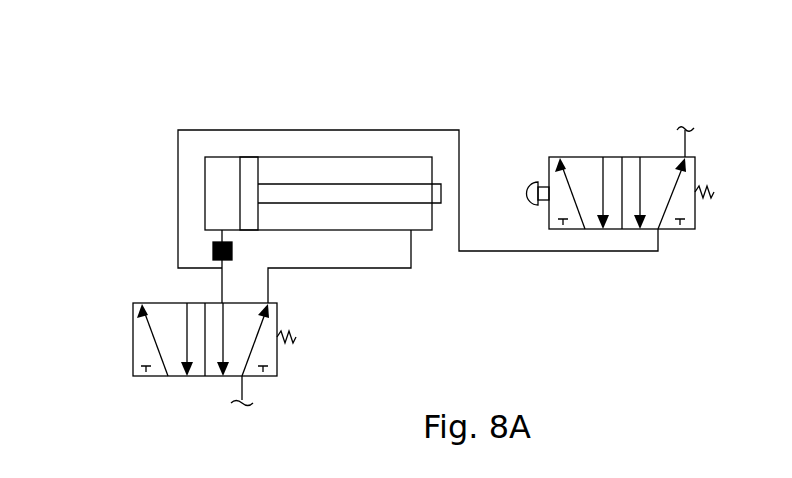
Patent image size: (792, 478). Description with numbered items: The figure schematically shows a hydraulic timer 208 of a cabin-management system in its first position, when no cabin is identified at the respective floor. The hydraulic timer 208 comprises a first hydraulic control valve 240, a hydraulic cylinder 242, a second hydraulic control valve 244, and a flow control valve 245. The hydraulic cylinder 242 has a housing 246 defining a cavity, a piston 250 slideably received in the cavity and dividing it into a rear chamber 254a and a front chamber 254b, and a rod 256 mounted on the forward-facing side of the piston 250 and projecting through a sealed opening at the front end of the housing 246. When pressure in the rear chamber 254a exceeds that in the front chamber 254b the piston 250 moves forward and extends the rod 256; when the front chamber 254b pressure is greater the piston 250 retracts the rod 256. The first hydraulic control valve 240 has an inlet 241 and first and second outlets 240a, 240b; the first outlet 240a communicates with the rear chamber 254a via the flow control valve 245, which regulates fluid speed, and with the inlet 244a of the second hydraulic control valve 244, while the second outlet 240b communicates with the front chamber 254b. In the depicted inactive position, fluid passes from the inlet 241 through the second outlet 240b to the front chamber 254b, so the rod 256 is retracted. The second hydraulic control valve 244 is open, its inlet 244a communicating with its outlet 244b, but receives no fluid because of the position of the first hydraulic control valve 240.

The hydraulic timer 208 is at (632, 103).
The first hydraulic control valve 240 is at (133, 360).
The first outlet 240a is at (143, 303).
The second outlet 240b is at (272, 304).
The inlet 241 is at (250, 392).
The hydraulic cylinder 242 is at (322, 146).
The second hydraulic control valve 244 is at (697, 213).
The inlet 244a is at (660, 232).
The outlet 244b is at (687, 131).
The flow control valve 245 is at (234, 250).
The housing 246 is at (276, 158).
The piston 250 is at (250, 172).
The rear chamber 254a is at (218, 181).
The front chamber 254b is at (388, 170).
The rod 256 is at (385, 205).